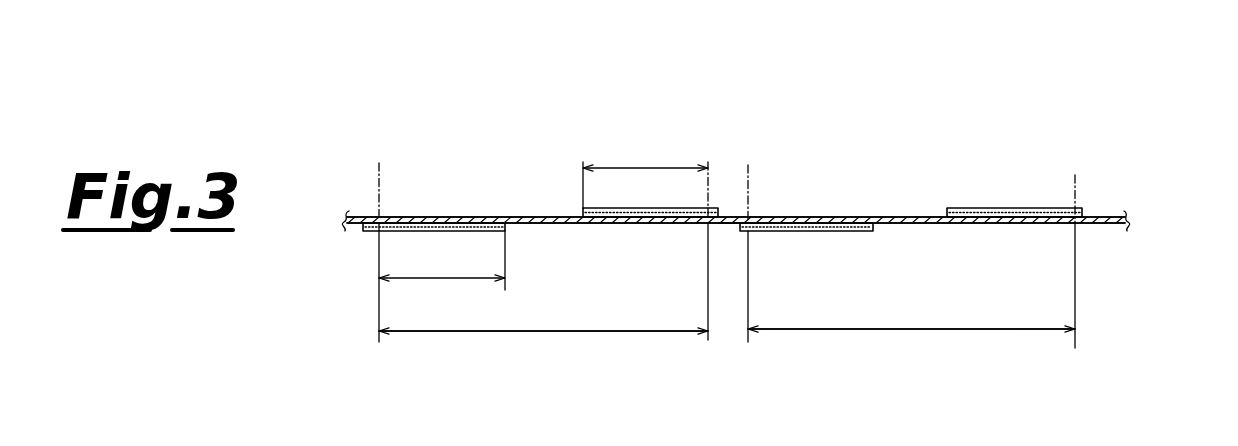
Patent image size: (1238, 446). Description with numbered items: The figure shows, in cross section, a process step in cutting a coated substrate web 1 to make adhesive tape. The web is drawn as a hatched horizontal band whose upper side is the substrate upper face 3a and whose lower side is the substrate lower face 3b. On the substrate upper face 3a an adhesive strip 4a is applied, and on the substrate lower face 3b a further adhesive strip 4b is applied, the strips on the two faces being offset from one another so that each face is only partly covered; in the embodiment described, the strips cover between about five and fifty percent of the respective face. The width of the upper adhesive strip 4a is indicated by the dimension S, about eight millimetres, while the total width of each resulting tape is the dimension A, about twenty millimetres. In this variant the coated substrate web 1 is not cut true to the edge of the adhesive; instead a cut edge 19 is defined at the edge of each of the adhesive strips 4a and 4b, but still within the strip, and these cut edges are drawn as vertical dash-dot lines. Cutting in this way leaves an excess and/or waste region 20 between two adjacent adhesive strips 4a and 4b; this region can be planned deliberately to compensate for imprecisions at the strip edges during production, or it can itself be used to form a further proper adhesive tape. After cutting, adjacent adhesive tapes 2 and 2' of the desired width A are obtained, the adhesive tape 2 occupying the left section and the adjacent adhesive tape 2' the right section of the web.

The coated substrate web 1 is at (1108, 212).
The adhesive tape 2 is at (543, 186).
The adjacent adhesive tape 2' is at (911, 189).
The substrate upper face 3a is at (530, 214).
The substrate lower face 3b is at (653, 226).
The adhesive strip on substrate upper face 4a is at (607, 208).
The adhesive strip on substrate lower face 4b is at (395, 226).
The cut edge 19 is at (385, 200).
The excess and/or waste region 20 is at (733, 228).
The width of adhesive strip S is at (653, 163).
The total width of substrate A is at (540, 335).